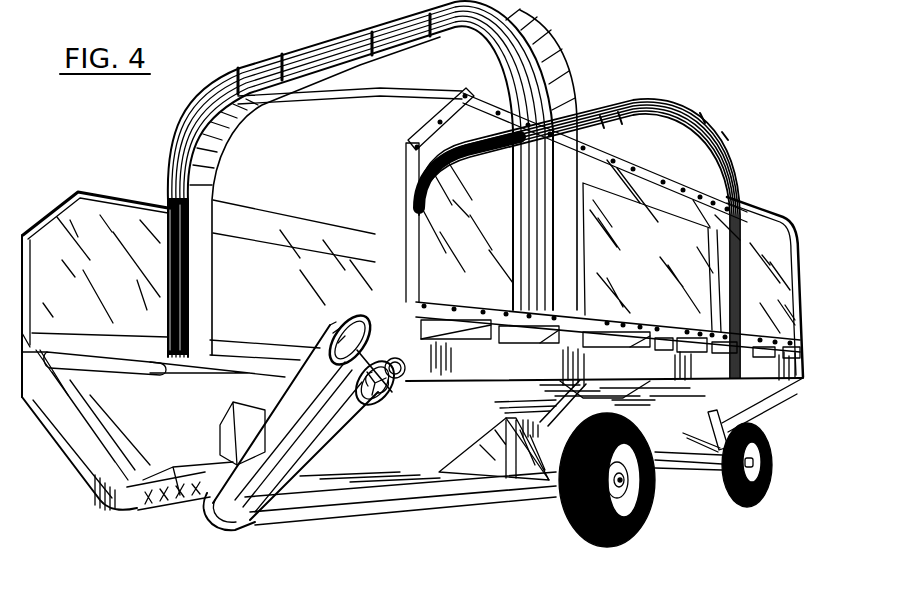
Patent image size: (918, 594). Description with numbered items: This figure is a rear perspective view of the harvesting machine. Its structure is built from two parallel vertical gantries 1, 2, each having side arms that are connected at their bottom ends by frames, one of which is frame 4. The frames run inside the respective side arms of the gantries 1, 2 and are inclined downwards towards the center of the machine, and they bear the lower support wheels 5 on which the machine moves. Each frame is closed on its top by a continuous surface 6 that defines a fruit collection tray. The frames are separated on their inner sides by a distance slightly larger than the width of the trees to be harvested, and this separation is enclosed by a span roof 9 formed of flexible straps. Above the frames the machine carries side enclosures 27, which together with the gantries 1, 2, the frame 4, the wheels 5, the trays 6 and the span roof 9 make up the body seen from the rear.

The vertical gantry 1 is at (674, 107).
The vertical gantry 2 is at (528, 53).
The side enclosure 27 is at (130, 265).
The frame 4 is at (53, 403).
The lower support wheel 5 is at (648, 532).
The continuous surface 6 is at (125, 402).
The span roof 9 is at (137, 507).